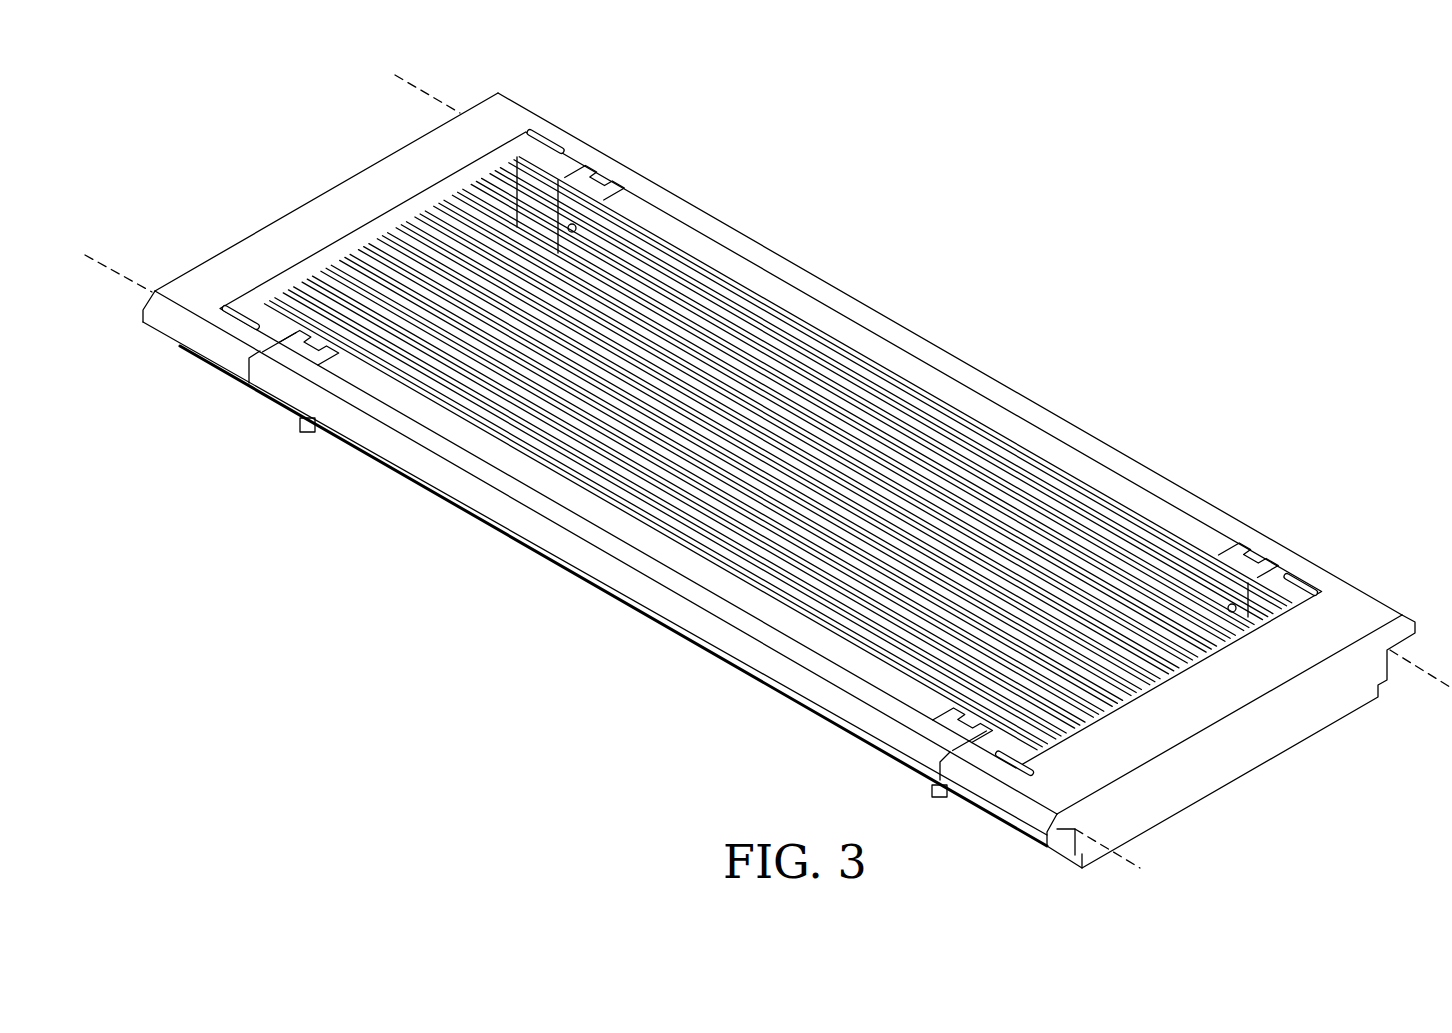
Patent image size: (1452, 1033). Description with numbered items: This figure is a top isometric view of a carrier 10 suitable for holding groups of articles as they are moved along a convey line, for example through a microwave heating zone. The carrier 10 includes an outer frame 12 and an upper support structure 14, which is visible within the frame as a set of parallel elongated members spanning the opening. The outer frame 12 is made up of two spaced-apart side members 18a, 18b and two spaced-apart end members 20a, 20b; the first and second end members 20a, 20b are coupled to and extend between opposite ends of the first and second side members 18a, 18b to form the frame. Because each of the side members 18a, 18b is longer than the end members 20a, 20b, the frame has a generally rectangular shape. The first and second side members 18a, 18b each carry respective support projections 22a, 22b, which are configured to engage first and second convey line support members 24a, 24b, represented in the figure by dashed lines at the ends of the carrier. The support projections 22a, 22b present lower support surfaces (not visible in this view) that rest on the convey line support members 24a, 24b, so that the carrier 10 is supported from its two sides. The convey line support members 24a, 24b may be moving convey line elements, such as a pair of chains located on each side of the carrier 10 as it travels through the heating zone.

The carrier 10 is at (1018, 236).
The outer frame 12 is at (440, 99).
The upper support structure 14 is at (722, 324).
The first side member 18a is at (925, 365).
The second side member 18b is at (622, 533).
The first end member 20a is at (1250, 753).
The second end member 20b is at (240, 237).
The first support projection 22a is at (1228, 528).
The second support projection 22b is at (888, 718).
The first convey line support member 24a is at (1422, 668).
The second convey line support member 24b is at (1133, 850).